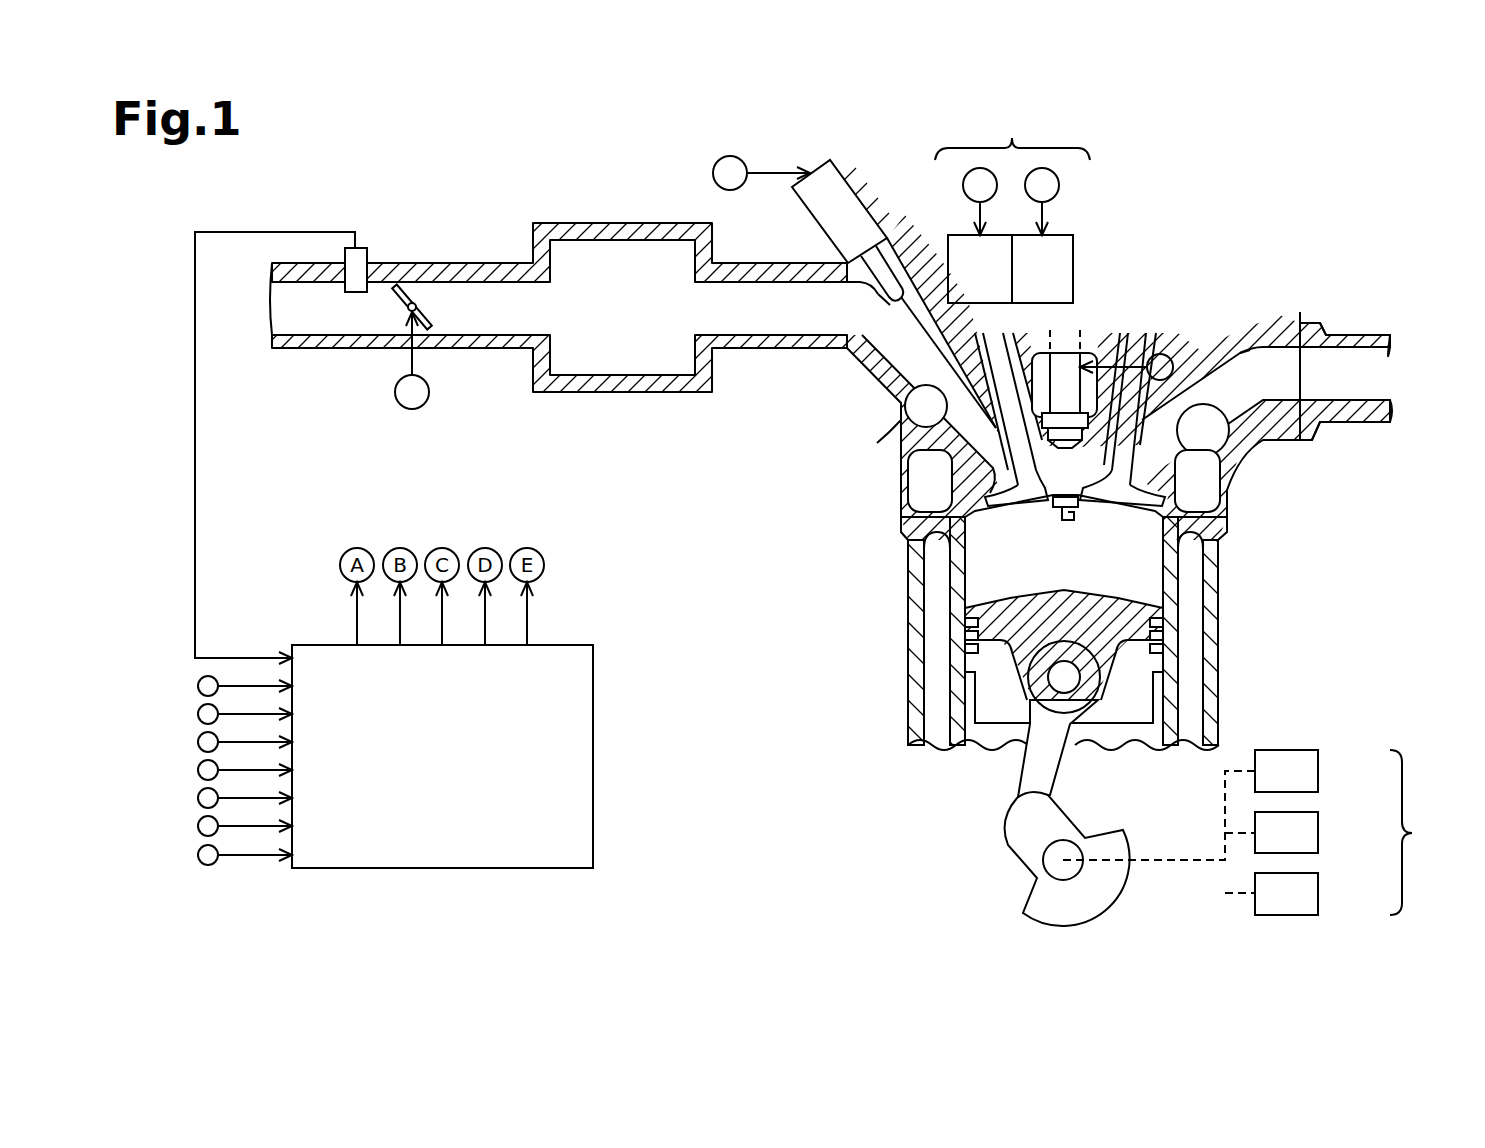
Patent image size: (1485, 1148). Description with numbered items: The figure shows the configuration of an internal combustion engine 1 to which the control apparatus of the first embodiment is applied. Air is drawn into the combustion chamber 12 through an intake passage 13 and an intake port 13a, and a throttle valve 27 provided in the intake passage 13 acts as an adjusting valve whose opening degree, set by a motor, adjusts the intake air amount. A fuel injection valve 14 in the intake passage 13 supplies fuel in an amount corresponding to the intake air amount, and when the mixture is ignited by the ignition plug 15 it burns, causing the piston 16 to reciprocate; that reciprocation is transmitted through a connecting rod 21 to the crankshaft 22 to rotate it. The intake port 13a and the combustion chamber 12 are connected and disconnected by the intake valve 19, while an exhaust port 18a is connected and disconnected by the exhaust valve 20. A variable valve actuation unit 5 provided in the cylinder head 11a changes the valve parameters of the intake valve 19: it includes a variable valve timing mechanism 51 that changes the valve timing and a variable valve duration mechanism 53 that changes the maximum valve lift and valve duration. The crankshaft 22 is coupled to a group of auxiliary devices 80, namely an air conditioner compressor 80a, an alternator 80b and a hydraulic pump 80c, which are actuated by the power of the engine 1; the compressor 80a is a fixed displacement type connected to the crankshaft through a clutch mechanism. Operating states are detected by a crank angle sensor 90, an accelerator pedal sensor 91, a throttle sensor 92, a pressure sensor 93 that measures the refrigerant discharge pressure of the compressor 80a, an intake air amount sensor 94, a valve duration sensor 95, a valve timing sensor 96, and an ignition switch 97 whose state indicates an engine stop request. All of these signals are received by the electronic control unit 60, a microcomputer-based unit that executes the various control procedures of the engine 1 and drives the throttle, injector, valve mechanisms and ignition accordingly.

The engine 1 is at (878, 609).
The variable valve actuation unit 5 is at (1003, 130).
The cylinder head 11a is at (1237, 505).
The combustion chamber 12 is at (1144, 579).
The intake passage 13 is at (755, 350).
The intake port 13a is at (880, 435).
The fuel injection valve 14 is at (810, 220).
The ignition plug 15 is at (1060, 520).
The piston 16 is at (1150, 750).
The exhaust port 18a is at (1235, 450).
The intake valve 19 is at (1020, 515).
The exhaust valve 20 is at (1110, 515).
The connecting rod 21 is at (1020, 778).
The crankshaft 22 is at (1125, 895).
The throttle valve 27 is at (410, 292).
The variable valve timing mechanism 51 is at (950, 235).
The variable valve duration mechanism 53 is at (1070, 235).
The electronic control unit 60 is at (593, 727).
The group of auxiliary devices 80 is at (1454, 848).
The air conditioner compressor 80a is at (1318, 771).
The alternator 80b is at (1318, 833).
The hydraulic pump 80c is at (1318, 893).
The crank angle sensor 90 is at (198, 686).
The accelerator pedal sensor 91 is at (198, 714).
The throttle sensor 92 is at (198, 742).
The pressure sensor 93 is at (198, 770).
The intake air amount sensor 94 is at (367, 253).
The valve duration sensor 95 is at (198, 798).
The valve timing sensor 96 is at (198, 826).
The ignition switch 97 is at (198, 855).